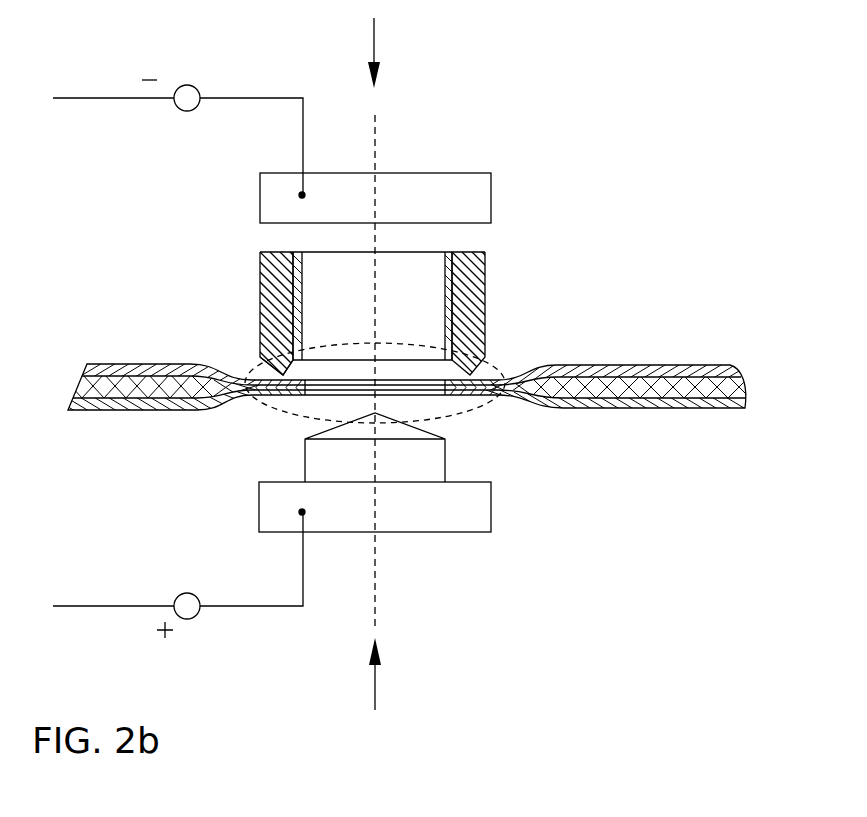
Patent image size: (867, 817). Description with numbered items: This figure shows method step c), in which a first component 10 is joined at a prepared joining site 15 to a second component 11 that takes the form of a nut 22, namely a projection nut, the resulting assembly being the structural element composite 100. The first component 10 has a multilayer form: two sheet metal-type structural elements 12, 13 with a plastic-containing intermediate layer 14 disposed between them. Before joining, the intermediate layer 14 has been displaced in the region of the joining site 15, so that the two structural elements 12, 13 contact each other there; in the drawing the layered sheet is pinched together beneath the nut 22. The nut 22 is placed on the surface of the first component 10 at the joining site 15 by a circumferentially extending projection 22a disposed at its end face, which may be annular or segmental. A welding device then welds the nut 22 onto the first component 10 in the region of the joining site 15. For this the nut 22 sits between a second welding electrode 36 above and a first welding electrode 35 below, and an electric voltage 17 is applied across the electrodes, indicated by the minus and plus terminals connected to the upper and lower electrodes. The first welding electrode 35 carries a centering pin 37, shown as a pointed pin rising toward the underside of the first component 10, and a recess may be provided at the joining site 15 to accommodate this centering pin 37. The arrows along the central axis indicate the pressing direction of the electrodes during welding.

The first component 10 is at (157, 422).
The second component 11 is at (473, 270).
The first structural element of the first component 12 is at (657, 408).
The second structural element of the first component 13 is at (650, 373).
The intermediate layer 14 is at (698, 387).
The joining site 15 is at (287, 413).
The electric voltage 17 is at (193, 86).
The nut 22 is at (272, 275).
The projection 22a is at (282, 365).
The first welding electrode 35 is at (477, 507).
The second welding electrode 36 is at (465, 185).
The centering pin 37 is at (430, 457).
The structural element composite 100 is at (548, 340).